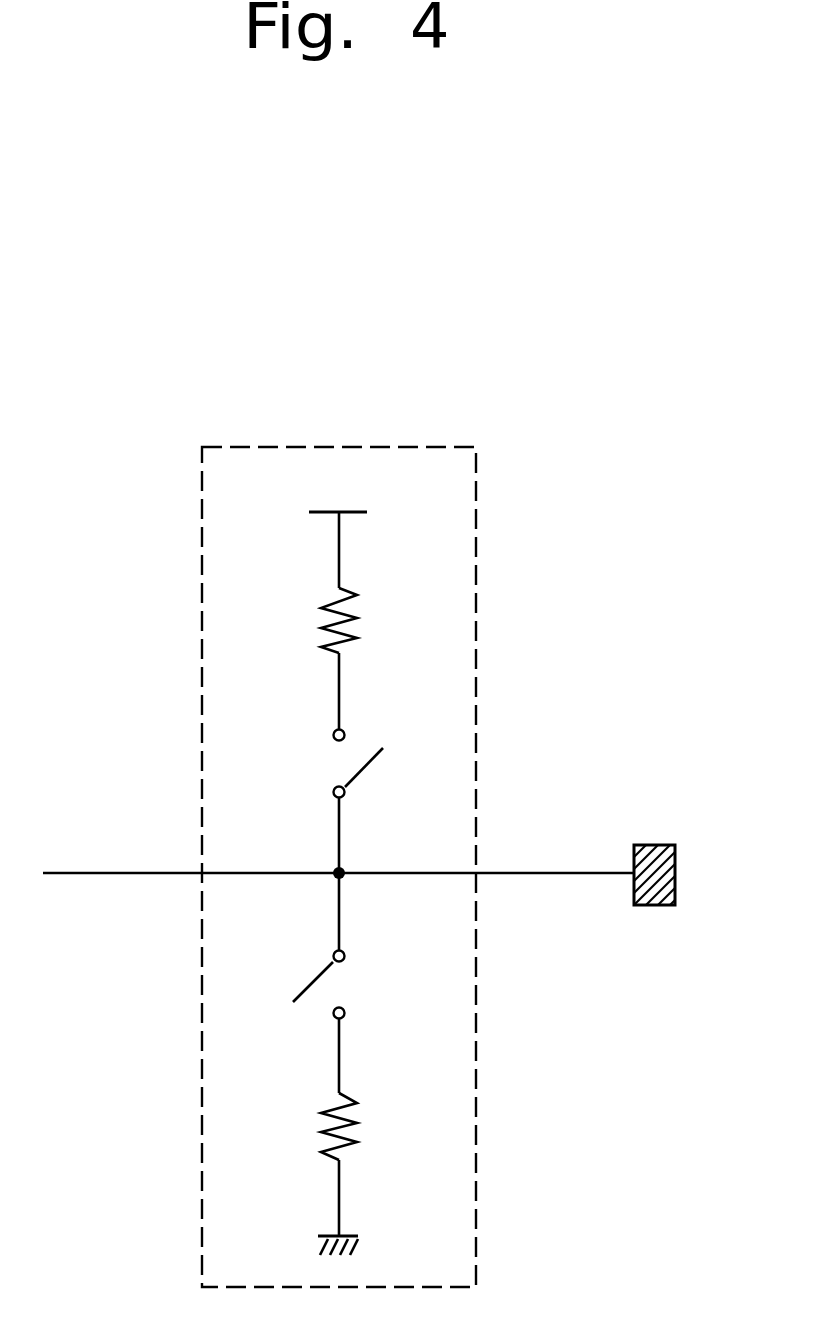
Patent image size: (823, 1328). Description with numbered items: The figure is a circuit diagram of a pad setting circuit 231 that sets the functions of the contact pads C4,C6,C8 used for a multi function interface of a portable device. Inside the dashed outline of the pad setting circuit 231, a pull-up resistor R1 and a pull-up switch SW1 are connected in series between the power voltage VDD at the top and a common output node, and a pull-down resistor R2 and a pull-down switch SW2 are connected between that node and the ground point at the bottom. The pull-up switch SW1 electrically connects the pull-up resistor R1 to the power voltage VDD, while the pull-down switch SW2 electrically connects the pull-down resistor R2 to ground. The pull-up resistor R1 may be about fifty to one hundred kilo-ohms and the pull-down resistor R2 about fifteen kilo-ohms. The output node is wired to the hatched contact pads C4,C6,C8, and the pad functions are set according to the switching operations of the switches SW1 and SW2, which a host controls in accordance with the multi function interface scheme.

The pad setting circuit 231 is at (413, 447).
The power voltage VDD is at (338, 528).
The pull-up resistor R1 is at (317, 658).
The pull-up switch SW1 is at (330, 802).
The pull-down switch SW2 is at (348, 946).
The pull-down resistor R2 is at (360, 1127).
The contact pads C4,C6,C8 is at (653, 897).